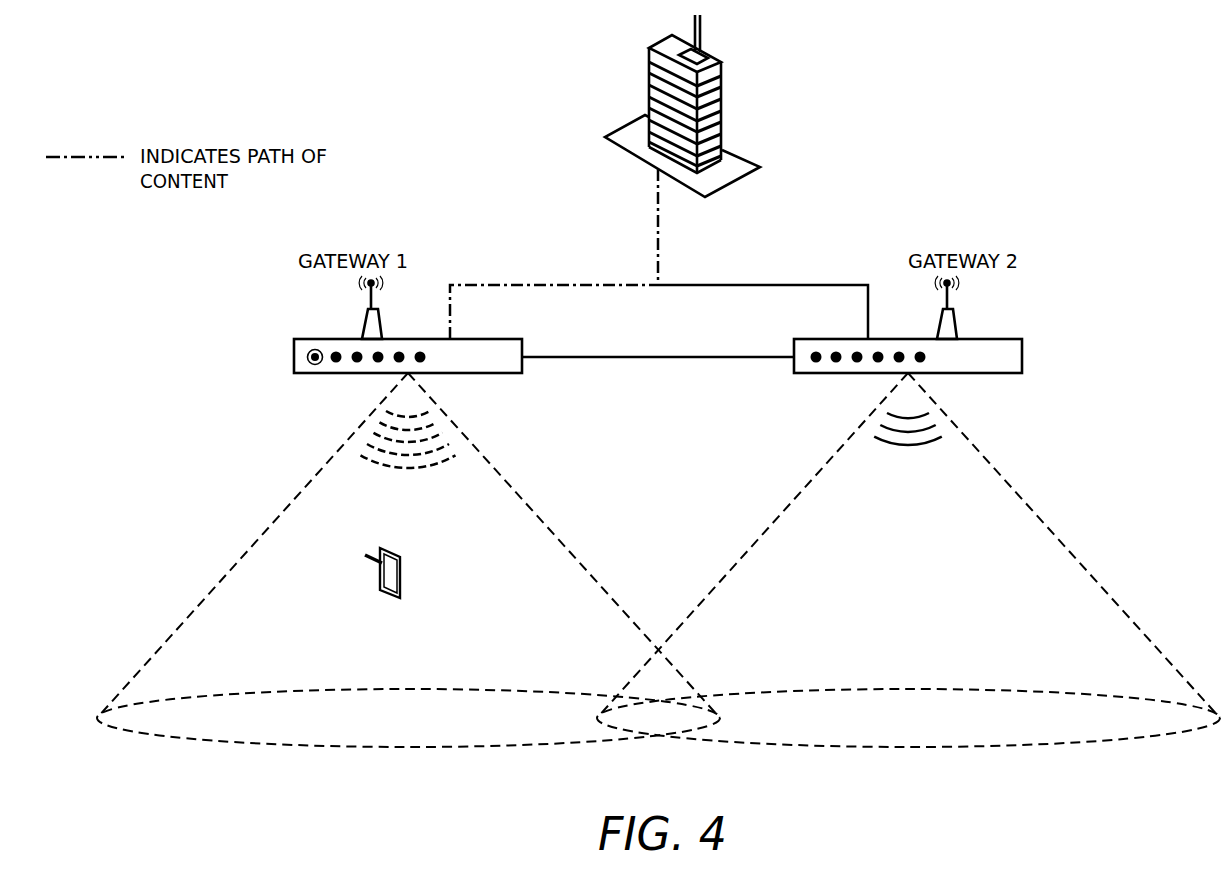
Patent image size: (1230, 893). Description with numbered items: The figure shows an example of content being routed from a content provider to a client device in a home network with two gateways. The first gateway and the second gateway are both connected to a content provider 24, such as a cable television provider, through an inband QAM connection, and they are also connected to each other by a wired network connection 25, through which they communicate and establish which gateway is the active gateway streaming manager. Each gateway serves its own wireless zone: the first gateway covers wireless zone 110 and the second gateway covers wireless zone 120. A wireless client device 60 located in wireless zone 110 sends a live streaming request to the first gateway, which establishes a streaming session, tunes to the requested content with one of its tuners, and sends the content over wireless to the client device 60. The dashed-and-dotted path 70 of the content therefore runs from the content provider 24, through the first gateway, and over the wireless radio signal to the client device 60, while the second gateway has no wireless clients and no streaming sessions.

The content provider 24 is at (647, 97).
The path of the content 70 is at (555, 285).
The wired network connection 25 is at (660, 357).
The wireless zone 110 is at (241, 558).
The wireless zone 120 is at (740, 560).
The wireless client device 60 is at (402, 577).